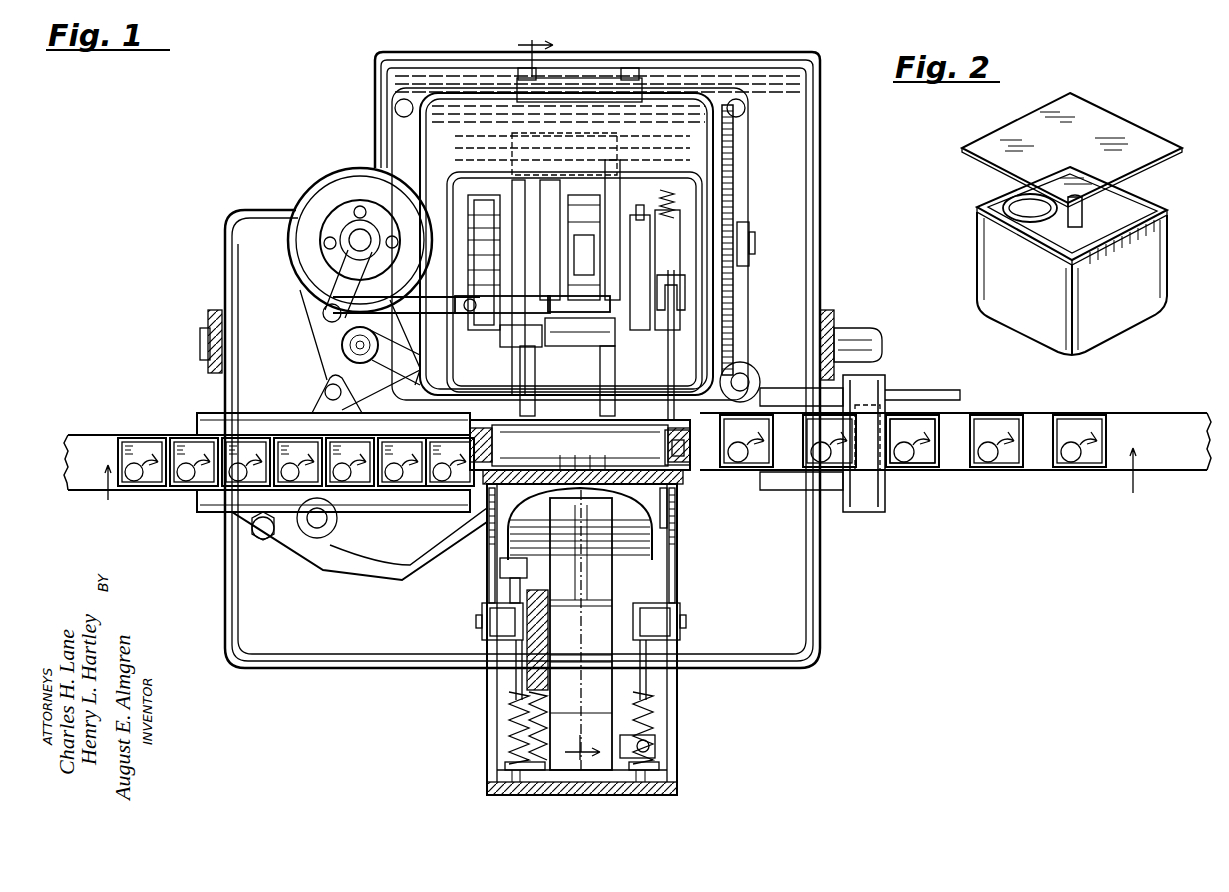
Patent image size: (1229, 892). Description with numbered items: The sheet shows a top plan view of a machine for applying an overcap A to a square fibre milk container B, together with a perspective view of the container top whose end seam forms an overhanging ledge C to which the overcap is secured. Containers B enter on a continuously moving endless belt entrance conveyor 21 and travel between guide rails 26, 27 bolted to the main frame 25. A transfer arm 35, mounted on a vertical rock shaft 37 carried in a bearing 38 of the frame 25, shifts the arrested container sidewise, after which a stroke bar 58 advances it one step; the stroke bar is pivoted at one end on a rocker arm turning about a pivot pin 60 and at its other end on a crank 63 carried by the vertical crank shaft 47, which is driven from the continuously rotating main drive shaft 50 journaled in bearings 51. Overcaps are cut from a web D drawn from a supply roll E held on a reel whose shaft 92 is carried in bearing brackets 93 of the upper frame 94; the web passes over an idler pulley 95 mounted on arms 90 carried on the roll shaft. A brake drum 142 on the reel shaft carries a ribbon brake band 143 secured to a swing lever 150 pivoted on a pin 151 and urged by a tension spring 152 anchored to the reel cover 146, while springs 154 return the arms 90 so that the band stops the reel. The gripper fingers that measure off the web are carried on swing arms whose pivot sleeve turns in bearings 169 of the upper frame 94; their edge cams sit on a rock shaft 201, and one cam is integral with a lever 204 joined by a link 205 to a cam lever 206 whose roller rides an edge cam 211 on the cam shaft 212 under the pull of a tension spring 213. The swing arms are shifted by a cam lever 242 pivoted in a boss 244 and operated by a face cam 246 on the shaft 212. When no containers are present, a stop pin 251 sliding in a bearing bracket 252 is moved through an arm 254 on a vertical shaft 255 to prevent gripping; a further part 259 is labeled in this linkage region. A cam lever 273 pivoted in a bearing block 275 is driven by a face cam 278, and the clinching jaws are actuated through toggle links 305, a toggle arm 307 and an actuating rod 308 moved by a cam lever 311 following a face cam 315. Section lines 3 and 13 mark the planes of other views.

In FIG. 1, the entrance conveyor 21 is at (83, 448).
In FIG. 1, the frame 25 is at (286, 662).
In FIG. 1, the guide rail 26 is at (412, 497).
In FIG. 1, the guide rail 27 is at (255, 425).
In FIG. 1, the transfer arm 35 is at (398, 565).
In FIG. 1, the vertical rock shaft 37 is at (313, 520).
In FIG. 1, the bearing 38 is at (338, 520).
In FIG. 1, the vertical crank shaft 47 is at (375, 372).
In FIG. 1, the main drive shaft 50 is at (203, 345).
In FIG. 1, the bearings 51 is at (215, 318).
In FIG. 1, the stroke bar 58 is at (405, 357).
In FIG. 1, the pivot pin 60 is at (742, 382).
In FIG. 1, the crank 63 is at (385, 338).
In FIG. 1, the arms 90 is at (645, 662).
In FIG. 1, the shaft 92 is at (686, 622).
In FIG. 1, the bearing brackets 93 is at (487, 515).
In FIG. 1, the upper frame 94 is at (672, 494).
In FIG. 1, the idler pulley 95 is at (655, 722).
In FIG. 1, the brake drum 142 is at (540, 612).
In FIG. 1, the ribbon brake band 143 is at (537, 623).
In FIG. 1, the cover 146 is at (677, 765).
In FIG. 1, the swing lever 150 is at (512, 590).
In FIG. 1, the pivot pin 151 is at (500, 568).
In FIG. 1, the tension spring 152 is at (512, 698).
In FIG. 1, the springs 154 is at (510, 712).
In FIG. 1, the bearings 169 is at (553, 430).
In FIG. 1, the rock shaft 201 is at (468, 432).
In FIG. 1, the lever 204 is at (685, 440).
In FIG. 1, the link 205 is at (670, 382).
In FIG. 1, the cam lever 206 is at (715, 290).
In FIG. 1, the edge cam 211 is at (645, 208).
In FIG. 1, the cam shaft 212 is at (752, 242).
In FIG. 1, the tension spring 213 is at (675, 198).
In FIG. 1, the cam lever 242 is at (490, 290).
In FIG. 1, the boss 244 is at (470, 250).
In FIG. 1, the face cam 246 is at (475, 205).
In FIG. 1, the stop pin 251 is at (525, 340).
In FIG. 1, the bearing bracket 252 is at (590, 332).
In FIG. 1, the arm 254 is at (340, 280).
In FIG. 1, the vertical shaft 255 is at (357, 236).
In FIG. 1, the link 259 is at (436, 312).
In FIG. 1, the cam lever 273 is at (585, 244).
In FIG. 1, the bearing block 275 is at (548, 128).
In FIG. 1, the face cam 278 is at (472, 287).
In FIG. 1, the toggle links 305 is at (620, 478).
In FIG. 1, the toggle arm 307 is at (672, 515).
In FIG. 1, the actuating rod 308 is at (547, 312).
In FIG. 1, the cam lever 311 is at (590, 305).
In FIG. 1, the face cam 315 is at (615, 195).
In FIG. 1, the overcap A is at (920, 432).
In FIG. 2, the overcap A is at (1105, 120).
In FIG. 1, the container B is at (150, 440).
In FIG. 2, the container B is at (1148, 258).
In FIG. 2, the overhanging ledge C is at (1138, 200).
In FIG. 1, the web D is at (607, 727).
In FIG. 1, the supply roll E is at (640, 583).
In FIG. 1, the section line 3 is at (632, 488).
In FIG. 1, the section line 13 is at (550, 391).